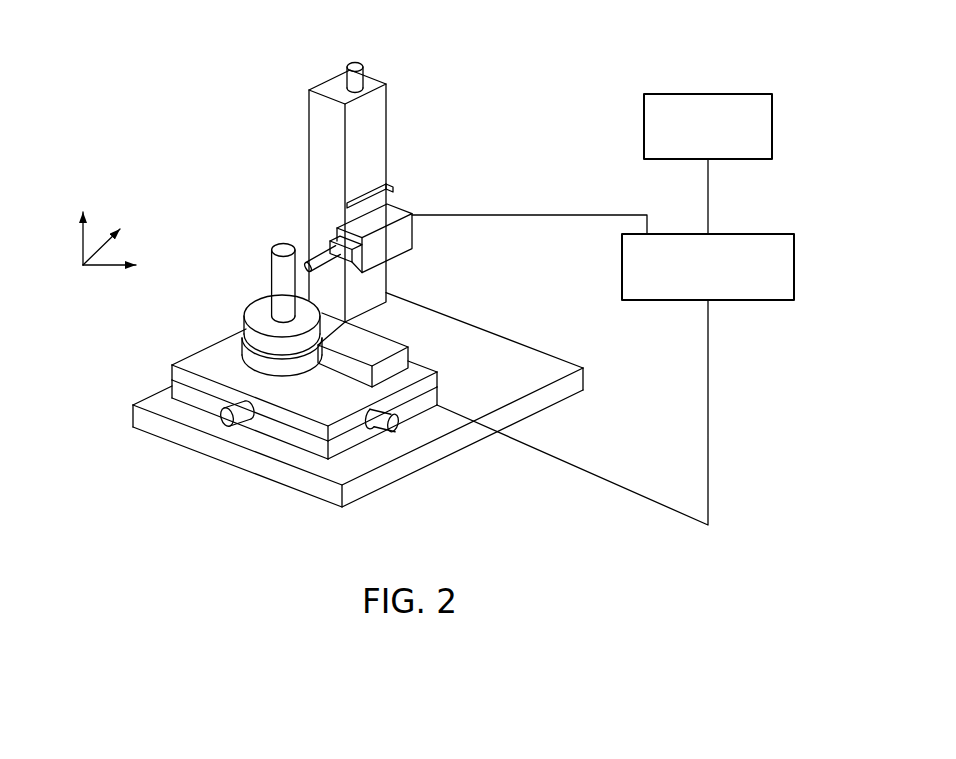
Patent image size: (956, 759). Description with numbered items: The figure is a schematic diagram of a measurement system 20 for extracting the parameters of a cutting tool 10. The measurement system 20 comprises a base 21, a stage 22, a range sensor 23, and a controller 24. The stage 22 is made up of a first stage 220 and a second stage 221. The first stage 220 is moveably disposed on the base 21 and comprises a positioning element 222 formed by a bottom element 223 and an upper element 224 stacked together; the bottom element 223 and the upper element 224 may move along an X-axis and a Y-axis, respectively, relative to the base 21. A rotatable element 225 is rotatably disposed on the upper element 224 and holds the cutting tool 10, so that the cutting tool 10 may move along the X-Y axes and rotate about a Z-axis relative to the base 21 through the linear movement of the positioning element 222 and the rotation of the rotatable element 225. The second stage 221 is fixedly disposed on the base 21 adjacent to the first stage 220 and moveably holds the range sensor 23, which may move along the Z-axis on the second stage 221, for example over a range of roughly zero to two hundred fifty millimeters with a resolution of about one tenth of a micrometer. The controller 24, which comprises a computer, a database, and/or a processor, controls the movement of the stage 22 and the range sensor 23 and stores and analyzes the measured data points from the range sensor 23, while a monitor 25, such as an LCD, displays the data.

The measurement system 20 is at (431, 51).
The cutting tool 10 is at (273, 277).
The base 21 is at (468, 337).
The stage 22 is at (297, 171).
The second stage 221 is at (380, 110).
The range sensor 23 is at (394, 205).
The first stage 220 is at (193, 364).
The positioning element 222 is at (352, 438).
The bottom element 223 is at (197, 398).
The upper element 224 is at (312, 410).
The rotatable element 225 is at (245, 330).
The controller 24 is at (794, 265).
The monitor 25 is at (772, 127).